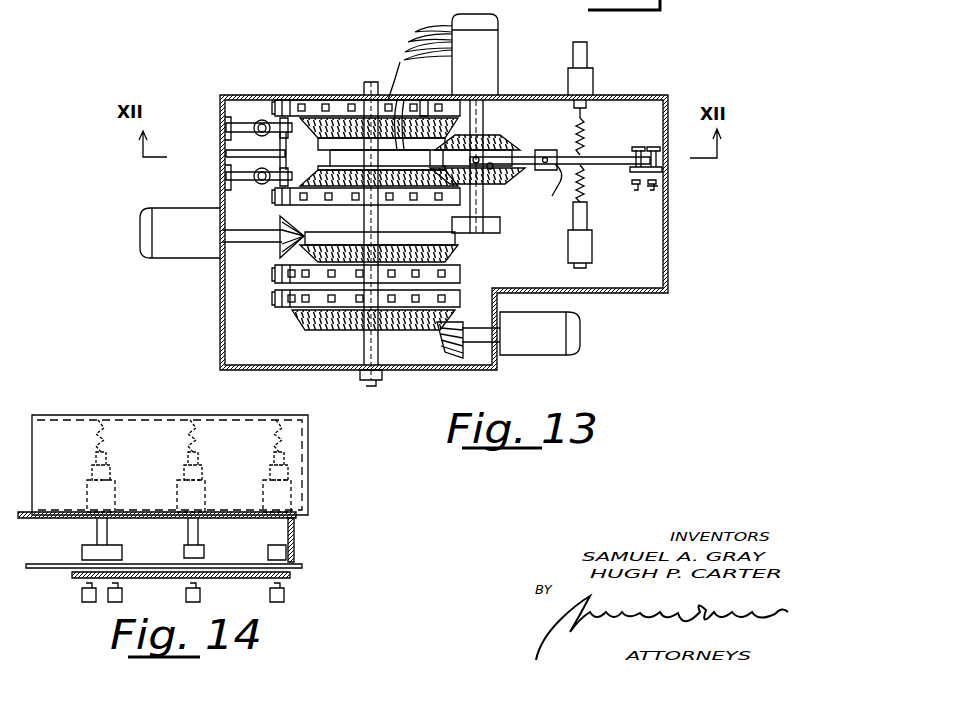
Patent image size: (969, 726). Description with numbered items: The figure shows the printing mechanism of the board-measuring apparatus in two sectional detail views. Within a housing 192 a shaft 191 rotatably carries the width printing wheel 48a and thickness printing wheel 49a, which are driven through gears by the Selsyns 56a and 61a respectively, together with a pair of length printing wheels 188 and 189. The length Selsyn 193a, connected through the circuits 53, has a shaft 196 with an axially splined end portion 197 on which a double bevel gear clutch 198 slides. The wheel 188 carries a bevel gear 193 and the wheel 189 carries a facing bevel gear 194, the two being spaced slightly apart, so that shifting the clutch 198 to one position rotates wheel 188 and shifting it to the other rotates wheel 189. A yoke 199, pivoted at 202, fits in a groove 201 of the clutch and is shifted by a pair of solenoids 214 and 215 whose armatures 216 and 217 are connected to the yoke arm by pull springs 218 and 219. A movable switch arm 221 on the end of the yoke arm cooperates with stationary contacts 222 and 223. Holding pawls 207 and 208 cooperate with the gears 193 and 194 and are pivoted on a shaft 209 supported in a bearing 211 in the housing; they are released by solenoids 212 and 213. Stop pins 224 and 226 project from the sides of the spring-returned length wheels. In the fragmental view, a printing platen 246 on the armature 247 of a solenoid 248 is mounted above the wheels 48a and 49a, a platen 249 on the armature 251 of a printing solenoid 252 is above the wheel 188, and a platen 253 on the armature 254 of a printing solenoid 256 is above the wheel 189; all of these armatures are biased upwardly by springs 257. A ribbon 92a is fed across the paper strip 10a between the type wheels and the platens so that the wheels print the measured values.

In FIG. 13, the housing 192 is at (255, 95).
In FIG. 13, the Selsyn 61a is at (186, 208).
In FIG. 13, the Selsyn 56a is at (580, 343).
In FIG. 13, the length Selsyn 193a is at (487, 46).
In FIG. 13, the circuits 53 is at (428, 31).
In FIG. 13, the solenoid 214 is at (594, 82).
In FIG. 13, the solenoid armature 216 is at (587, 104).
In FIG. 13, the pull spring 218 is at (580, 130).
In FIG. 13, the yoke 199 is at (585, 142).
In FIG. 13, the pull spring 219 is at (586, 196).
In FIG. 13, the solenoid armature 217 is at (588, 218).
In FIG. 13, the solenoid 215 is at (593, 246).
In FIG. 13, the axially splined end portion 197 is at (492, 140).
In FIG. 13, the double bevel gear clutch 198 is at (518, 178).
In FIG. 13, the pivot 202 is at (545, 198).
In FIG. 13, the shaft 196 is at (486, 114).
In FIG. 13, the groove 201 is at (488, 186).
In FIG. 13, the movable switch arm 221 is at (644, 147).
In FIG. 13, the stationary contact 222 is at (662, 147).
In FIG. 13, the stationary contact 223 is at (656, 186).
In FIG. 13, the solenoid 213 is at (258, 118).
In FIG. 13, the shaft 209 is at (226, 136).
In FIG. 13, the bearing 211 is at (226, 153).
In FIG. 13, the solenoid 212 is at (258, 186).
In FIG. 13, the shaft 191 is at (364, 347).
In FIG. 13, the holding pawl 208 is at (292, 100).
In FIG. 13, the length printing wheel 189 is at (334, 100).
In FIG. 14, the length printing wheel 189 is at (284, 596).
In FIG. 13, the stop pin 226 is at (370, 75).
In FIG. 13, the bevel gear 194 is at (424, 100).
In FIG. 13, the holding pawl 207 is at (292, 186).
In FIG. 13, the stop pin 224 is at (338, 200).
In FIG. 13, the bevel gear 193 is at (352, 205).
In FIG. 13, the length printing wheel 188 is at (392, 205).
In FIG. 14, the length printing wheel 188 is at (200, 592).
In FIG. 13, the thickness printing wheel 49a is at (274, 282).
In FIG. 14, the thickness printing wheel 49a is at (122, 592).
In FIG. 13, the width printing wheel 48a is at (310, 330).
In FIG. 14, the width printing wheel 48a is at (81, 590).
In FIG. 14, the armature 254 is at (296, 528).
In FIG. 14, the printing platen 253 is at (290, 552).
In FIG. 14, the springs 257 is at (180, 435).
In FIG. 14, the solenoid 248 is at (86, 497).
In FIG. 14, the printing solenoid 252 is at (190, 490).
In FIG. 14, the printing solenoid 256 is at (278, 493).
In FIG. 14, the armature 247 is at (96, 534).
In FIG. 14, the printing platen 246 is at (81, 553).
In FIG. 14, the armature 251 is at (199, 532).
In FIG. 14, the printing platen 249 is at (205, 550).
In FIG. 14, the ribbon 92a is at (296, 565).
In FIG. 14, the paper strip 10a is at (288, 578).